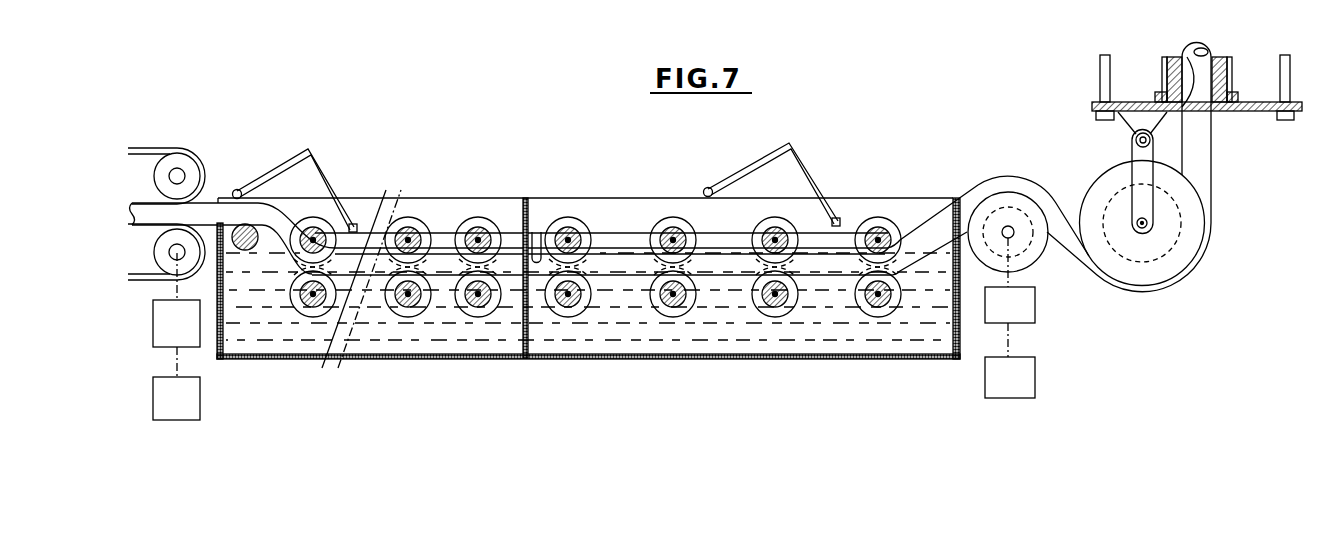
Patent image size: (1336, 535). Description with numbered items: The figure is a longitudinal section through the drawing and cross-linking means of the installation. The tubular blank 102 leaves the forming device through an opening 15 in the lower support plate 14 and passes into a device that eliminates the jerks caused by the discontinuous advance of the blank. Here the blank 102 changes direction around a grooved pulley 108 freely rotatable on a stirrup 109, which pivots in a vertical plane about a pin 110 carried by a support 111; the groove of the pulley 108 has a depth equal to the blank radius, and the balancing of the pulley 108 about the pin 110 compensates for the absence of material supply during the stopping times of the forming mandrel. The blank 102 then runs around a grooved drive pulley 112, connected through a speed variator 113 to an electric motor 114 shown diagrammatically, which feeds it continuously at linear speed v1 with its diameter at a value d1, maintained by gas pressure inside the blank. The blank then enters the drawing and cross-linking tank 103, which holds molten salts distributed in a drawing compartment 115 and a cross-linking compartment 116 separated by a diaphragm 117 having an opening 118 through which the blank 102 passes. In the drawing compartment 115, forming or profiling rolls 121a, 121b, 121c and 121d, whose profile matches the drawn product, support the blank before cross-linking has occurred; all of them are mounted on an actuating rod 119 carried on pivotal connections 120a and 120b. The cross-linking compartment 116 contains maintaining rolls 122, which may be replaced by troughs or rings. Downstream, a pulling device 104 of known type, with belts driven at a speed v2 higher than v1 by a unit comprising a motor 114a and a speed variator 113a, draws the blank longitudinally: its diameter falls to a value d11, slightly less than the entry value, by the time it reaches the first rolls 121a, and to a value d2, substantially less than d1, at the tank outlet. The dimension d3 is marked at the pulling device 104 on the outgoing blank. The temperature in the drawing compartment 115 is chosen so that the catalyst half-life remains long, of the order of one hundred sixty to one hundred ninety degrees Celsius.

The lower support plate 14 is at (1258, 101).
The opening 15 is at (1182, 55).
The tubular blank 102 is at (1205, 165).
The drawing and cross-linking tank 103 is at (612, 165).
The pulling device 104 is at (210, 128).
The grooved pulley 108 is at (1190, 245).
The stirrup 109 is at (1148, 205).
The pin 110 is at (1135, 138).
The support 111 is at (1132, 118).
The grooved drive pulley 112 is at (1033, 256).
The speed variator 113 is at (1035, 310).
The electric motor 114 is at (1022, 384).
The speed variator 113a is at (195, 347).
The motor 114a is at (200, 402).
The drawing compartment 115 is at (680, 340).
The cross-linking compartment 116 is at (352, 350).
The diaphragm 117 is at (522, 322).
The opening 118 is at (540, 230).
The actuating rod 119 is at (440, 232).
The pivotal connection 120a is at (270, 185).
The pivotal connection 120b is at (702, 190).
The forming roll 121a is at (878, 315).
The forming roll 121b is at (782, 312).
The forming roll 121c is at (685, 311).
The forming roll 121d is at (582, 312).
The maintaining rolls 122 is at (468, 308).
The blank diameter d1 is at (973, 247).
The blank diameter d2 is at (230, 240).
The web thickness d3 is at (143, 240).
The blank diameter d11 is at (858, 293).